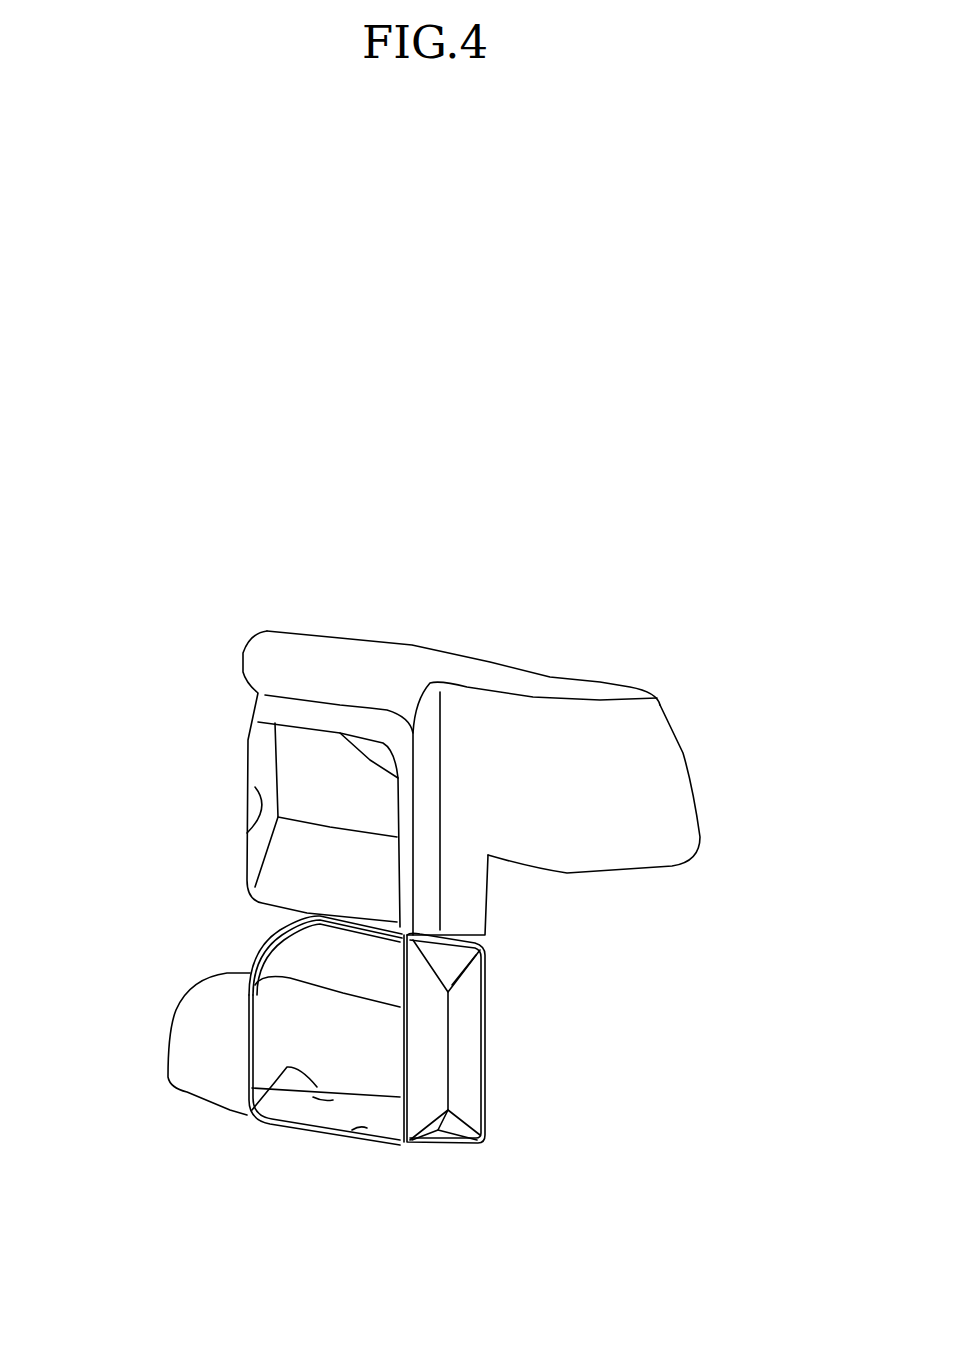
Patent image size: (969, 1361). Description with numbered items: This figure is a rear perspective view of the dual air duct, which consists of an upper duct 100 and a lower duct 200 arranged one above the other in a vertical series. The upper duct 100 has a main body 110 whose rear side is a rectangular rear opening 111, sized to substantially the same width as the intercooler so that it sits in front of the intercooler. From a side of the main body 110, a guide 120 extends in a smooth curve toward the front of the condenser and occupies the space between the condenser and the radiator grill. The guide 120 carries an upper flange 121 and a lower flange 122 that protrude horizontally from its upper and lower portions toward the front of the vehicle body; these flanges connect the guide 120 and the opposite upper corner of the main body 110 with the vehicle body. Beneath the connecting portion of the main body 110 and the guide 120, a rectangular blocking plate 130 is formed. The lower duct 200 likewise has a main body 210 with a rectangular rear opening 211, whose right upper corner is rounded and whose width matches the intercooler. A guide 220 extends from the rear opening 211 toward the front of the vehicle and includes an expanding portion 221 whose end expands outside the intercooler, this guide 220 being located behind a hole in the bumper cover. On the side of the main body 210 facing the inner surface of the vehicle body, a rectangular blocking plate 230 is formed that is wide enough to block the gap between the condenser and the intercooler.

The upper duct 100 is at (659, 681).
The main body 110 is at (303, 717).
The rectangular rear opening 111 is at (262, 830).
The guide 120 is at (633, 783).
The upper flange 121 is at (540, 688).
The lower flange 122 is at (370, 777).
The blocking plate 130 is at (465, 897).
The lower duct 200 is at (496, 1070).
The main body 210 is at (360, 1130).
The rectangular rear opening 211 is at (308, 1133).
The guide 220 is at (250, 1113).
The expanding portion 221 is at (178, 1068).
The rectangular blocking plate 230 is at (483, 1103).